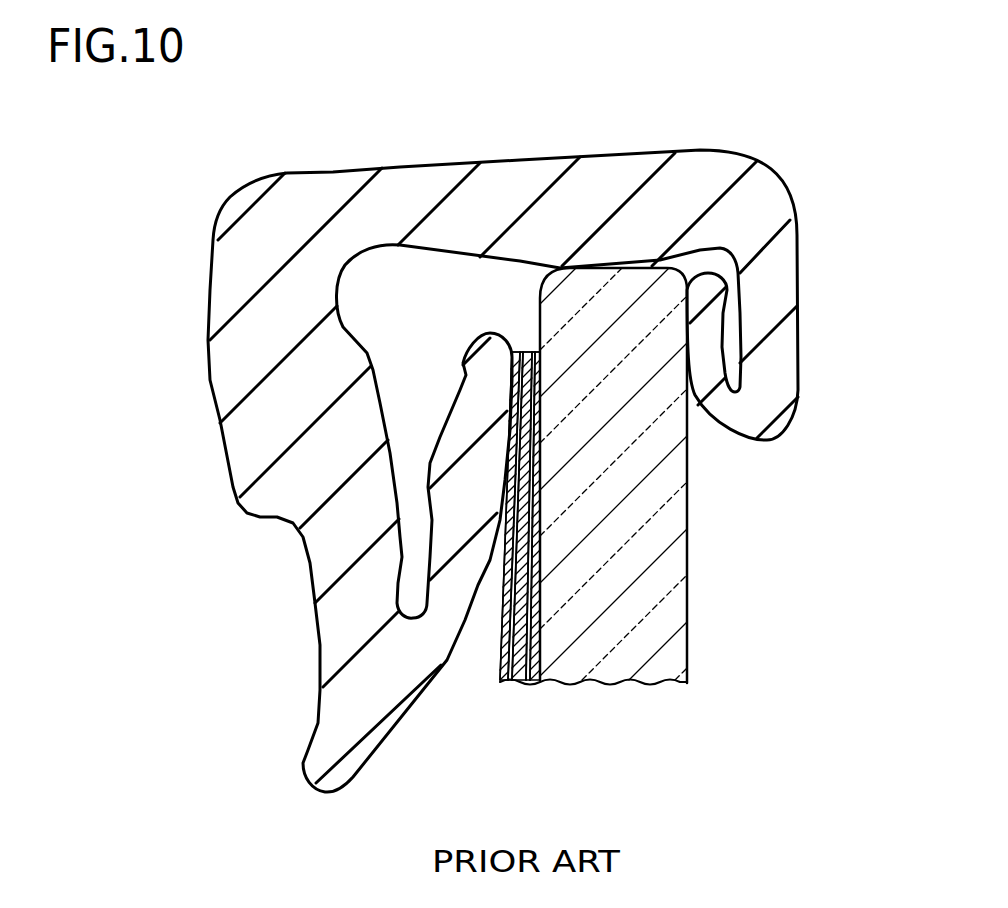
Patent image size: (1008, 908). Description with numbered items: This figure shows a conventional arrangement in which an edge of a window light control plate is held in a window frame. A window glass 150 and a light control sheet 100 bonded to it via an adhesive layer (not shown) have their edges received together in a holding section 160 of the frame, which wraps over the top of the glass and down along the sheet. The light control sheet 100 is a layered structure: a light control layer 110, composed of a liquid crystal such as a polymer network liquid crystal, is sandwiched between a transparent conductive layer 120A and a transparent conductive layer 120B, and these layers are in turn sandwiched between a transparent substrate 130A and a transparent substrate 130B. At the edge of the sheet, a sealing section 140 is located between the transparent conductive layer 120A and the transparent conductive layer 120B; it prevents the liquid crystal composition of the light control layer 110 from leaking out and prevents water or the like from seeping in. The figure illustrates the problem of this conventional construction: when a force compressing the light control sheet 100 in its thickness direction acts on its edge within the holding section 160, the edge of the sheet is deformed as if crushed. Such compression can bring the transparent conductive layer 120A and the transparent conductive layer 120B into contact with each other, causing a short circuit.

The light control sheet 100 is at (500, 625).
The light control layer 110 is at (525, 683).
The transparent conductive layer 120A is at (513, 683).
The transparent conductive layer 120B is at (533, 683).
The transparent substrate 130A is at (502, 683).
The transparent substrate 130B is at (538, 683).
The sealing section 140 is at (523, 352).
The window glass 150 is at (687, 550).
The holding section 160 is at (777, 182).